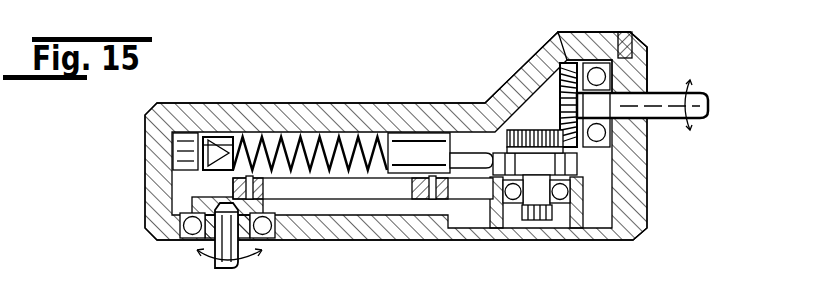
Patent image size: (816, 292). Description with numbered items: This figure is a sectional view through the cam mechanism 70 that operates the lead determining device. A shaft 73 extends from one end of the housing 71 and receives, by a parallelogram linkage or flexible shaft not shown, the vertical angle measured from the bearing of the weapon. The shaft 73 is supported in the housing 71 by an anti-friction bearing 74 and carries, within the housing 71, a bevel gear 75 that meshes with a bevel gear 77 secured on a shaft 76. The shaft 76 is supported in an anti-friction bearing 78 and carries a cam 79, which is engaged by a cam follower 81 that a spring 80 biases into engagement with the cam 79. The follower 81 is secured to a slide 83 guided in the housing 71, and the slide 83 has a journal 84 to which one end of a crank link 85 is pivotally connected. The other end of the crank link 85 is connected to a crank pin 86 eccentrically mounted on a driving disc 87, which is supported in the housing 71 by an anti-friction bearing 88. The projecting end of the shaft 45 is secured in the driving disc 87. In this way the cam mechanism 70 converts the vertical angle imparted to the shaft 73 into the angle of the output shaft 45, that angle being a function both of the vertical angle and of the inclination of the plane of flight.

The cam mechanism 70 is at (501, 61).
The housing 71 is at (276, 104).
The shaft 73 is at (700, 95).
The anti-friction bearing 74 is at (605, 82).
The bevel gear 75 is at (563, 32).
The shaft 76 is at (538, 214).
The bevel gear 77 is at (550, 128).
The anti-friction bearing 78 is at (560, 220).
The cam 79 is at (580, 155).
The spring 80 is at (332, 140).
The cam follower 81 is at (465, 150).
The slide 83 is at (412, 150).
The journal 84 is at (431, 200).
The crank link 85 is at (331, 197).
The crank pin 86 is at (237, 178).
The driving disc 87 is at (252, 248).
The anti-friction bearing 88 is at (190, 218).
The shaft 45 is at (213, 249).